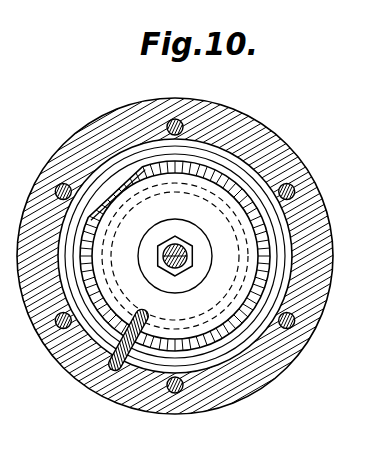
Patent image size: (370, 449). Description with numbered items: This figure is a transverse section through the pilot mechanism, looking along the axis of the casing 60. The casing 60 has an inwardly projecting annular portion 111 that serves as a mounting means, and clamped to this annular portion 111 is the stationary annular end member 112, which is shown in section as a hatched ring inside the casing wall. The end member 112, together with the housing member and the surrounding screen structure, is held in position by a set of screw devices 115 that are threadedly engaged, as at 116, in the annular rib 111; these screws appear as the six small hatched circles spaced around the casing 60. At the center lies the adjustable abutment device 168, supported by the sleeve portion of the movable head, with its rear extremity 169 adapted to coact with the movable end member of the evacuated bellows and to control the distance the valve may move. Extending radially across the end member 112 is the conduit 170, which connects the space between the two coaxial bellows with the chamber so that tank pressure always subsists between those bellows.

The casing 60 is at (90, 125).
The annular portion 111 is at (260, 150).
The annular end member 112 is at (233, 194).
The screw devices 115 is at (167, 120).
The threaded engagement 116 is at (177, 132).
The adjustable abutment device 168 is at (175, 247).
The rear extremity 169 is at (180, 265).
The conduit 170 is at (140, 313).